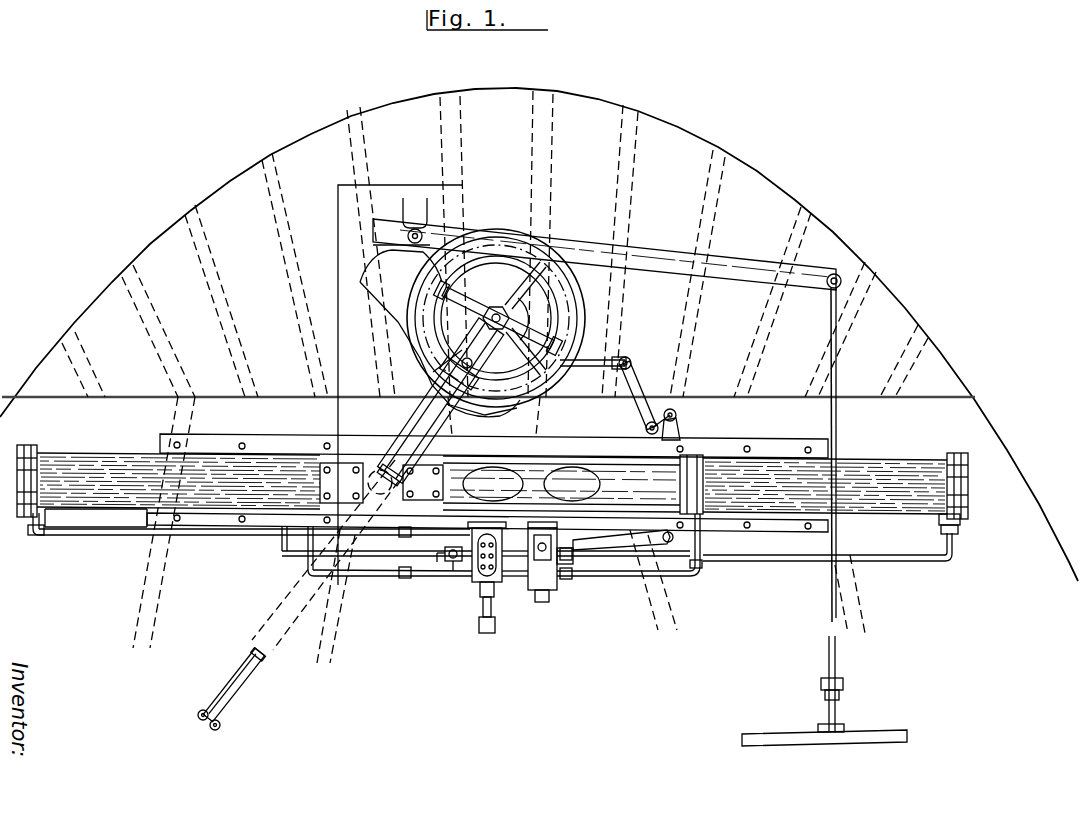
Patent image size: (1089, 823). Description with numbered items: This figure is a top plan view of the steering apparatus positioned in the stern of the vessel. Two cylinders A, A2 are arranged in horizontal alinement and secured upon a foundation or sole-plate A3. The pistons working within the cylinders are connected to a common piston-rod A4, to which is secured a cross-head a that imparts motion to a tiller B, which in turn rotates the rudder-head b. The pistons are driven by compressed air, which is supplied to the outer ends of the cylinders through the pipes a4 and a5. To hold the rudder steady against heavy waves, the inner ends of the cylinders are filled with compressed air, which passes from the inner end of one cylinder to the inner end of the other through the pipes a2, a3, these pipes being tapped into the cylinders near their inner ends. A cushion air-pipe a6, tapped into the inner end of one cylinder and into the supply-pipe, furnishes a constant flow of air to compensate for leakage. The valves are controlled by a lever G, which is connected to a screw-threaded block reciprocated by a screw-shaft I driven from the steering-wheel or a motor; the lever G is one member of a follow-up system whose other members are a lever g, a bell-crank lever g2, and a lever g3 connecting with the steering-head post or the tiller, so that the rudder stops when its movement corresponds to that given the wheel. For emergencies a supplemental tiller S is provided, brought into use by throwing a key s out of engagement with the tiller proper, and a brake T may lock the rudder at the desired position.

The brake T is at (660, 244).
The rudder-head b is at (512, 326).
The lever g is at (677, 428).
The bell-crank lever g2 is at (640, 392).
The lever g3 is at (598, 368).
The cylinder A is at (103, 457).
The cylinder A2 is at (876, 460).
The foundation or sole-plate A3 is at (234, 446).
The piston-rod A4 is at (540, 478).
The cross-head a is at (340, 465).
The pipe a2 is at (394, 577).
The pipe a3 is at (638, 577).
The pipe a4 is at (103, 536).
The pipe a5 is at (893, 562).
The cushion air-pipe a6 is at (435, 562).
The tiller B is at (447, 414).
The key s is at (508, 400).
The screw-shaft I is at (544, 596).
The lever G is at (610, 550).
The supplemental tiller S is at (250, 668).